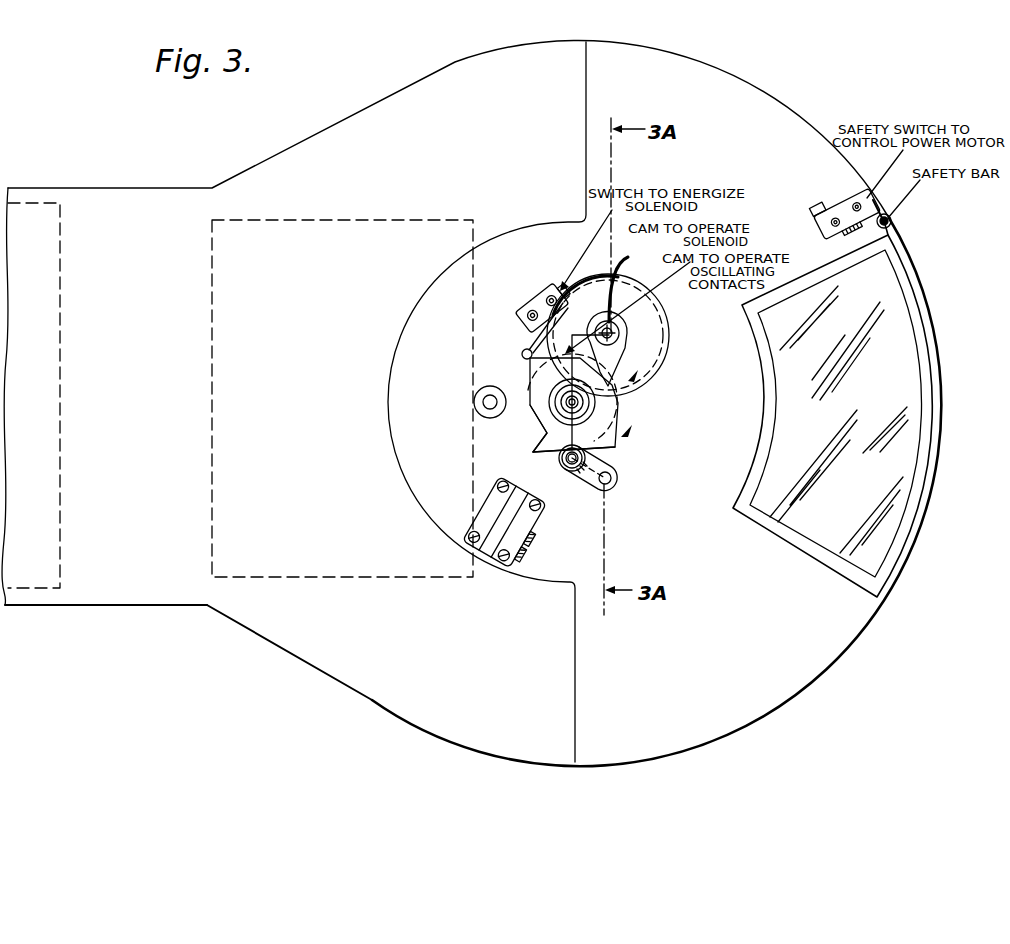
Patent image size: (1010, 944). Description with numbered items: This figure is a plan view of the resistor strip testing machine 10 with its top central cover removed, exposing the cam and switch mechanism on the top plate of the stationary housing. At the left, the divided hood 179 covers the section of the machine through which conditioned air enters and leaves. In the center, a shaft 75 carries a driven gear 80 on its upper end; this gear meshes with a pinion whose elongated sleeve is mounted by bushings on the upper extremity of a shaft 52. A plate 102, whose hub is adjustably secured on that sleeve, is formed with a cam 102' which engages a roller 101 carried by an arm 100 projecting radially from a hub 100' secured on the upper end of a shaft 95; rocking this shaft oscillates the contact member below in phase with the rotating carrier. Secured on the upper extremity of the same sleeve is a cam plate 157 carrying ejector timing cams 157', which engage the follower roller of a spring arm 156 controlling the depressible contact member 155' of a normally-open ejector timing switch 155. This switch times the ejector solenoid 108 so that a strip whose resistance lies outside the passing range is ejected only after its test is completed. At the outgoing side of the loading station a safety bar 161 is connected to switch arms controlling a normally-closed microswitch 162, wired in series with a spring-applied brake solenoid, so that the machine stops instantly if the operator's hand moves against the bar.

The resistor strip testing machine 10 is at (936, 517).
The shaft 52 is at (566, 408).
The shaft 75 is at (614, 328).
The driven gear 80 is at (669, 337).
The shaft 95 is at (598, 492).
The arm 100 is at (566, 484).
The hub 100' is at (627, 500).
The roller 101 is at (564, 464).
The plate 102 is at (622, 349).
The cam 102' is at (490, 444).
The ejector solenoid 108 is at (492, 513).
The ejector timing switch 155 is at (555, 292).
The depressible contact member 155' is at (637, 278).
The spring arm 156 is at (556, 322).
The cam plate 157 is at (608, 403).
The ejector timing cams 157' is at (611, 452).
The safety bar 161 is at (896, 221).
The microswitch 162 is at (837, 200).
The divided hood 179 is at (98, 594).